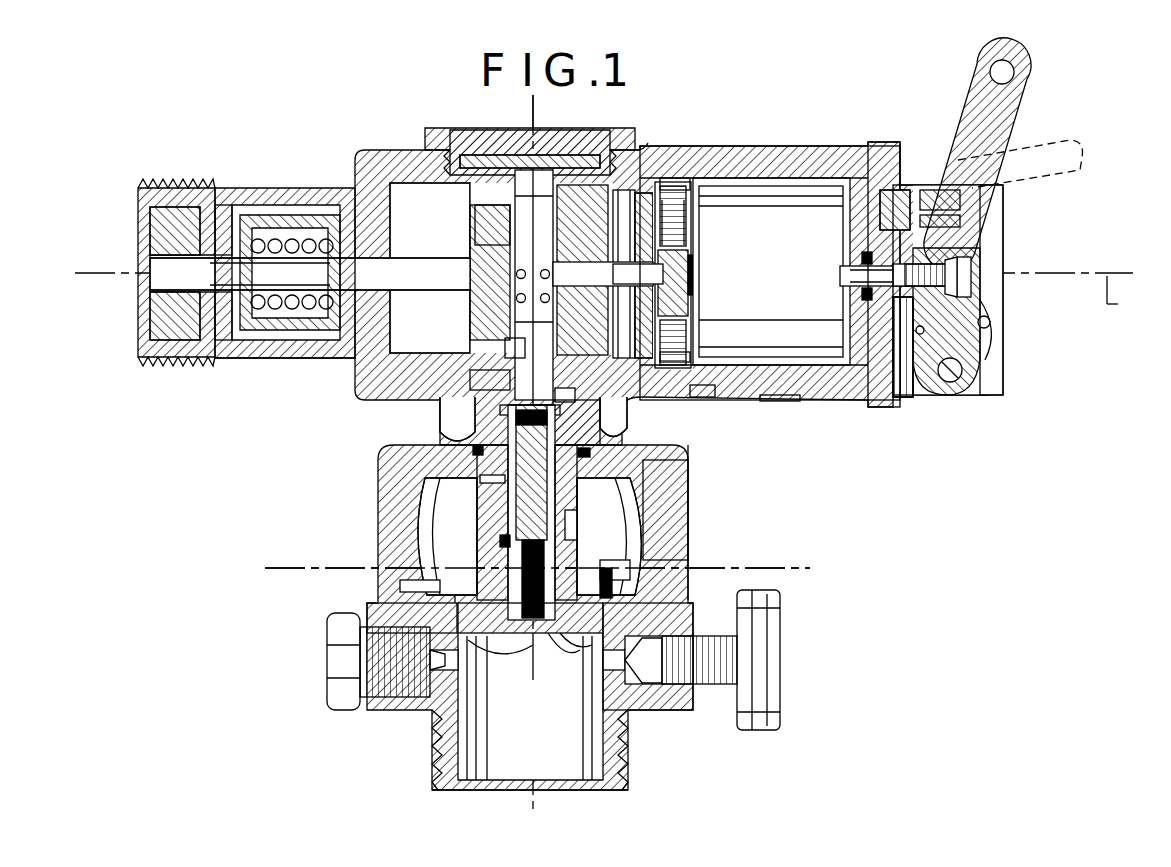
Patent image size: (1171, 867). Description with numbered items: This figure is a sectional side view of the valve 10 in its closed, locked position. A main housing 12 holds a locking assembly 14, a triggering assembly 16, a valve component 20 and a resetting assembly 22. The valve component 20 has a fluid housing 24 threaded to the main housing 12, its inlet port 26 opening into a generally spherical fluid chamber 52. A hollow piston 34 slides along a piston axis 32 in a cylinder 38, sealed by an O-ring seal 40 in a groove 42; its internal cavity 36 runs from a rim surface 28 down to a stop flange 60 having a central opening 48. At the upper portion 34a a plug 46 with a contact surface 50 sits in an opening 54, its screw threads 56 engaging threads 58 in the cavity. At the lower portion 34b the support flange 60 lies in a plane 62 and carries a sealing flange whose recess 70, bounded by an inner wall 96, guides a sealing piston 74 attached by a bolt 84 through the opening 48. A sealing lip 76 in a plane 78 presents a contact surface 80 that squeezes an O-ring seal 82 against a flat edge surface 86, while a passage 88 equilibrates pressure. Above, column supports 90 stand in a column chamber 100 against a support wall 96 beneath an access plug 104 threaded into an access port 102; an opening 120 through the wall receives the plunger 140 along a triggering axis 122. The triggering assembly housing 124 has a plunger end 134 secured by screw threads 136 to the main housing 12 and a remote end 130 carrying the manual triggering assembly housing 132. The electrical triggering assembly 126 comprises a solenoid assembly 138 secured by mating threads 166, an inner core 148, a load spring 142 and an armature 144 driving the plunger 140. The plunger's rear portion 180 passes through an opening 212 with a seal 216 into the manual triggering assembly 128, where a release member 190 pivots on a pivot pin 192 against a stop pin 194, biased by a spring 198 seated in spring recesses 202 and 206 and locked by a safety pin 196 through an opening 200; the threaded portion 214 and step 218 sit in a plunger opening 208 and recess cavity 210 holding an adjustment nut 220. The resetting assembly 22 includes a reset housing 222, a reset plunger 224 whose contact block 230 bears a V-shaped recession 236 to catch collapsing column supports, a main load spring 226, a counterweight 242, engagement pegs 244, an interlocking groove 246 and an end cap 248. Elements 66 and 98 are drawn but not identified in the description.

The valve 10 is at (378, 480).
The main housing 12 is at (634, 408).
The locking assembly 14 is at (468, 240).
The triggering assembly 16 is at (820, 176).
The valve component 20 is at (612, 558).
The resetting assembly 22 is at (270, 186).
The fluid housing 24 is at (680, 512).
The inlet port 26 is at (540, 746).
The rim surface 28 is at (560, 412).
The piston axis 32 is at (540, 102).
The piston 34 is at (470, 520).
The upper portion of piston 34a is at (505, 412).
The lower portion of piston 34b is at (606, 620).
The internal piston cavity 36 is at (590, 472).
The cylinder 38 is at (485, 378).
The seal 40 is at (440, 421).
The groove 42 is at (628, 415).
The plug 46 is at (572, 395).
The central opening 48 is at (587, 538).
The contact surface 50 is at (534, 285).
The fluid chamber 52 is at (688, 483).
The opening 54 is at (480, 478).
The screw threads 56 is at (480, 440).
The screw threads 58 is at (531, 511).
The support flange 60 is at (465, 560).
The plane 62 is at (800, 566).
The valve seat member 66 is at (530, 613).
The sealing flange recess 70 is at (500, 644).
The sealing piston 74 is at (570, 669).
The sealing lip 76 is at (581, 653).
The plane 78 is at (536, 658).
The contact surface 80 is at (456, 616).
The O-ring seal 82 is at (605, 573).
The bolt 84 is at (572, 522).
The flat edge surface 86 is at (400, 586).
The passage 88 is at (500, 540).
The column supports 90 is at (525, 196).
The support wall 96 is at (530, 150).
The seal 98 is at (515, 343).
The column chamber 100 is at (404, 185).
The access port 102 is at (612, 132).
The access plug 104 is at (486, 132).
The opening 120 is at (570, 268).
The triggering axis 122 is at (1132, 294).
The triggering assembly housing 124 is at (752, 162).
The electrical triggering assembly 126 is at (784, 402).
The manual triggering assembly 128 is at (1002, 400).
The remote end 130 is at (898, 412).
The manual triggering assembly housing 132 is at (1004, 372).
The plunger end 134 is at (664, 200).
The circumferential screw threads 136 is at (700, 352).
The solenoid assembly 138 is at (770, 332).
The plunger 140 is at (695, 290).
The load spring 142 is at (692, 250).
The armature 144 is at (684, 180).
The inner core 148 is at (682, 215).
The mating screw threads 166 is at (705, 396).
The rear portion 180 is at (1000, 302).
The release member 190 is at (1022, 100).
The pivot pin 192 is at (952, 386).
The stop pin 194 is at (992, 342).
The safety pin 196 is at (1027, 172).
The spring 198 is at (905, 200).
The opening 200 is at (988, 210).
The spring recess 202 is at (975, 235).
The spring recess 206 is at (882, 160).
The plunger opening 208 is at (946, 321).
The recess cavity 210 is at (992, 320).
The opening 212 is at (880, 272).
The threaded portion 214 is at (985, 288).
The seal 216 is at (866, 258).
The step 218 is at (939, 342).
The adjustment nut 220 is at (972, 262).
The reset housing 222 is at (266, 358).
The reset plunger 224 is at (155, 280).
The main load spring 226 is at (309, 240).
The resetting contact block 230 is at (490, 228).
The V-shaped recession 236 is at (310, 274).
The counterweight 242 is at (290, 332).
The engagement pegs 244 is at (214, 215).
The interlocking groove 246 is at (310, 274).
The end cap 248 is at (162, 232).